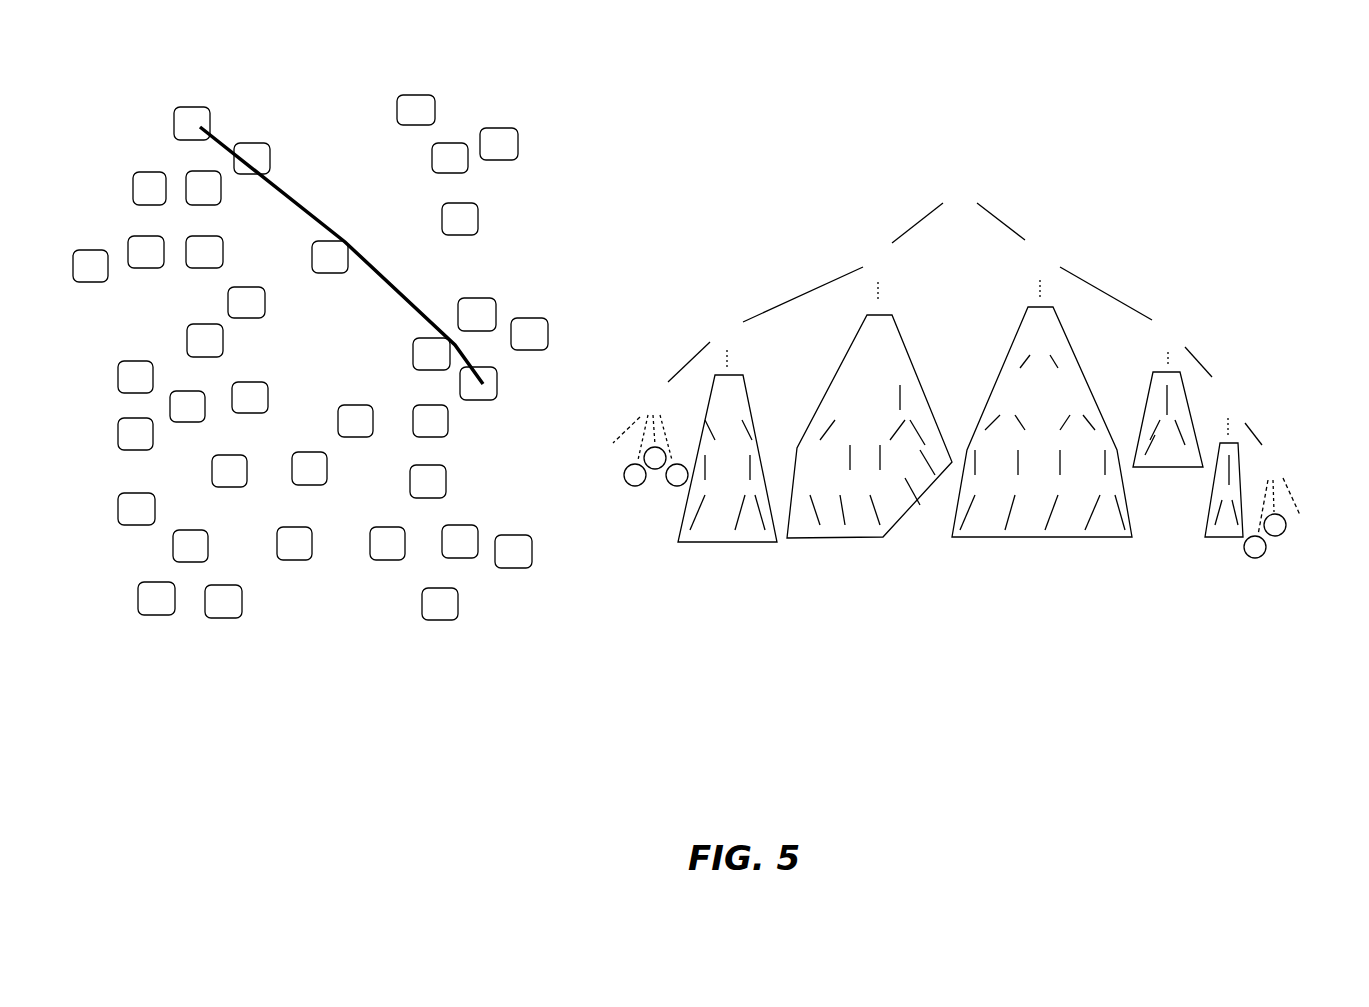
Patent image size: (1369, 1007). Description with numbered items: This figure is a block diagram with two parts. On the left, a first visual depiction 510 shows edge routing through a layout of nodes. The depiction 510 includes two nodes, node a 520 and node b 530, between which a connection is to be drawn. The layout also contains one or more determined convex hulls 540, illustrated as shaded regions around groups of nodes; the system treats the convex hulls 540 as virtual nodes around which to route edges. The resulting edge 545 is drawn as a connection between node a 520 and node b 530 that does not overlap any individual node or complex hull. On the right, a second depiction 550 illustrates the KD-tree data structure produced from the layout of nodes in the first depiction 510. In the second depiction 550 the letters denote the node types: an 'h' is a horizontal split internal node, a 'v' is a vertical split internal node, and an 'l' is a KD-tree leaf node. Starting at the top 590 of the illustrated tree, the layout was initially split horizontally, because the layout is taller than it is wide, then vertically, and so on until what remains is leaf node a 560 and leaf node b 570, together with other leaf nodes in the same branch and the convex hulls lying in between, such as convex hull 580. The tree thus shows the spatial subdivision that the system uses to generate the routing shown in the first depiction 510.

The first visual depiction 510 is at (470, 664).
The node a 520 is at (206, 122).
The node b 530 is at (497, 383).
The convex hulls 540 is at (520, 143).
The resulting edge 545 is at (392, 283).
The second depiction 550 is at (825, 715).
The leaf node a 560 is at (598, 488).
The leaf node b 570 is at (1305, 521).
The convex hull 580 is at (742, 544).
The top of the tree 590 is at (972, 190).